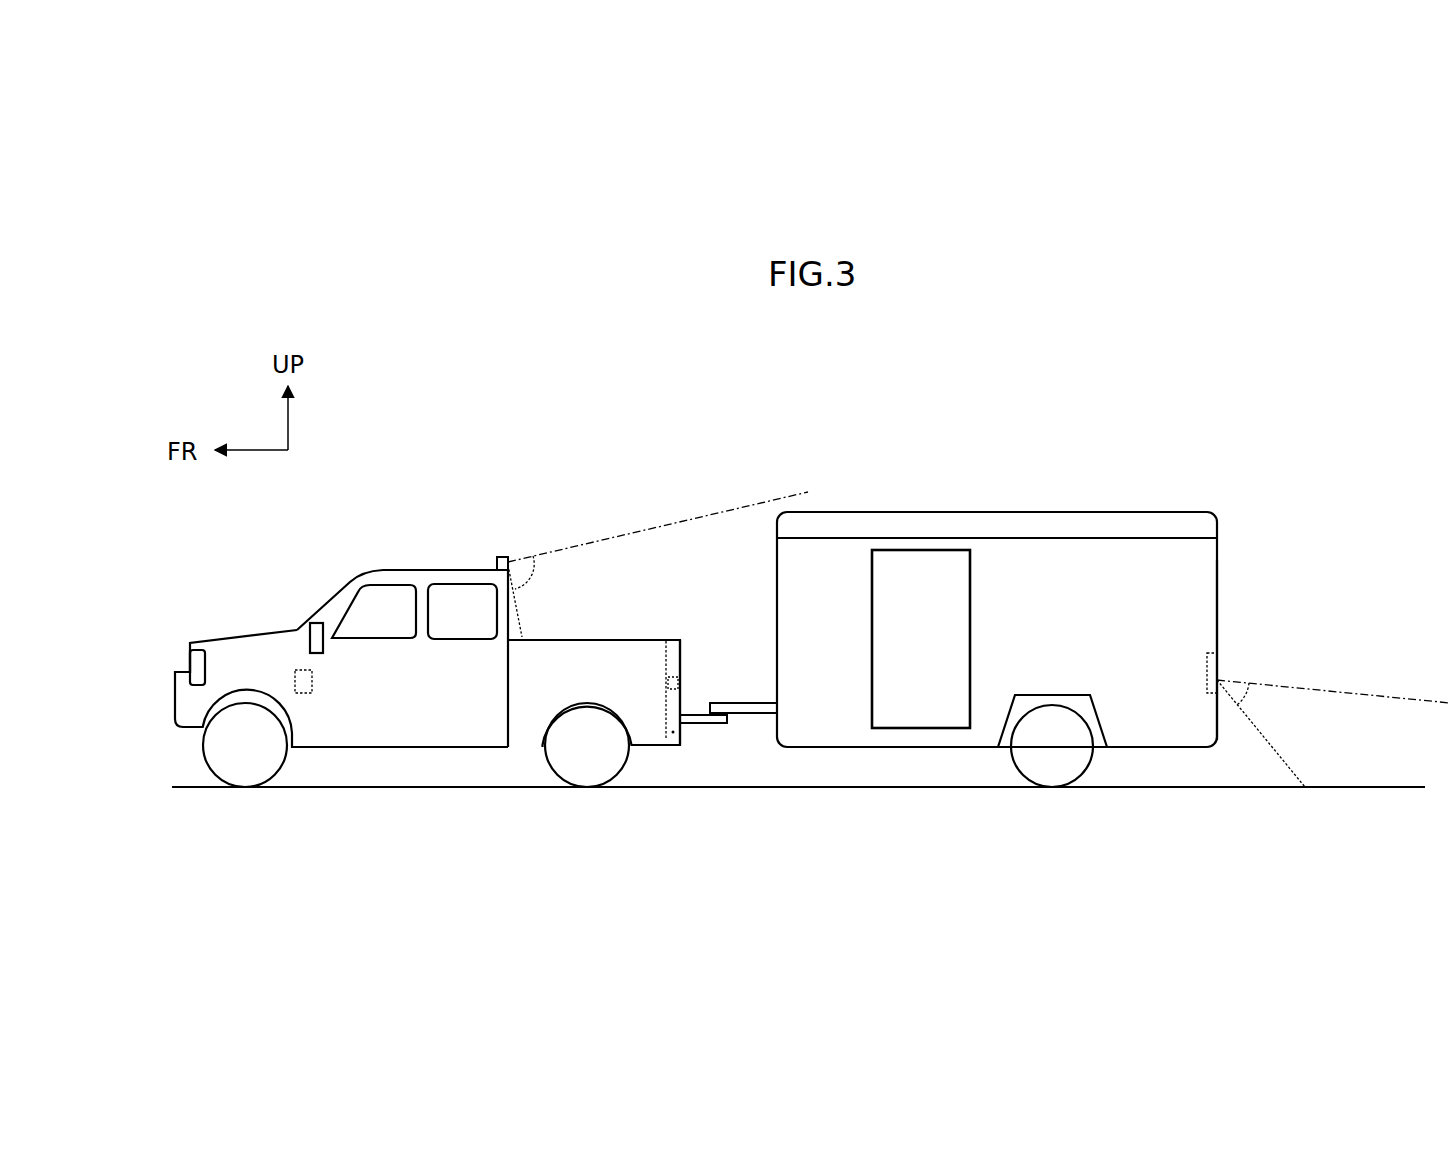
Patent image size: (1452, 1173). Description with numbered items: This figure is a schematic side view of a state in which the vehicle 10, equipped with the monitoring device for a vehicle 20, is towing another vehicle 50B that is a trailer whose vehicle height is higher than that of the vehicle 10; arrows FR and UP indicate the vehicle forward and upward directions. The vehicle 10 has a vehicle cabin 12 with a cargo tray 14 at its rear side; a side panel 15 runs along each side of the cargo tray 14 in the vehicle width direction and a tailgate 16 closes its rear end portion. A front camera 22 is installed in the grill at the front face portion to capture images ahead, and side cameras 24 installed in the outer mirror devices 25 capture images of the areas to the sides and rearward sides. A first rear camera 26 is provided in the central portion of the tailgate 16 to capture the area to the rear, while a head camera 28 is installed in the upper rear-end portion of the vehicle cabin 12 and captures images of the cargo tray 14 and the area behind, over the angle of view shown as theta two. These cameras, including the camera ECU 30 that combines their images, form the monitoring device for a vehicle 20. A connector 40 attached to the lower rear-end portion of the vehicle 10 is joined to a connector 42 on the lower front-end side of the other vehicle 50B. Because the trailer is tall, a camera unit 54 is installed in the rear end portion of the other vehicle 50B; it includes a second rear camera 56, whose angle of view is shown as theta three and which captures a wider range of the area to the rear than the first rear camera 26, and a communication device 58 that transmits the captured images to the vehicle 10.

The vehicle 10 is at (427, 497).
The vehicle cabin 12 is at (457, 600).
The cargo tray 14 is at (622, 627).
The side panel 15 is at (587, 643).
The tailgate 16 is at (666, 662).
The monitoring device for a vehicle 20 is at (517, 537).
The front camera 22 is at (177, 678).
The side camera 24 is at (326, 631).
The outer mirror device 25 is at (303, 633).
The first rear camera 26 is at (680, 663).
The head camera 28 is at (502, 557).
The camera ECU 30 is at (313, 682).
The connector 40 is at (697, 725).
The connector 42 is at (750, 715).
The other vehicle 50B is at (1120, 500).
The camera unit 54 is at (1195, 660).
The second rear camera 56 is at (1210, 697).
The communication device 58 is at (1217, 636).